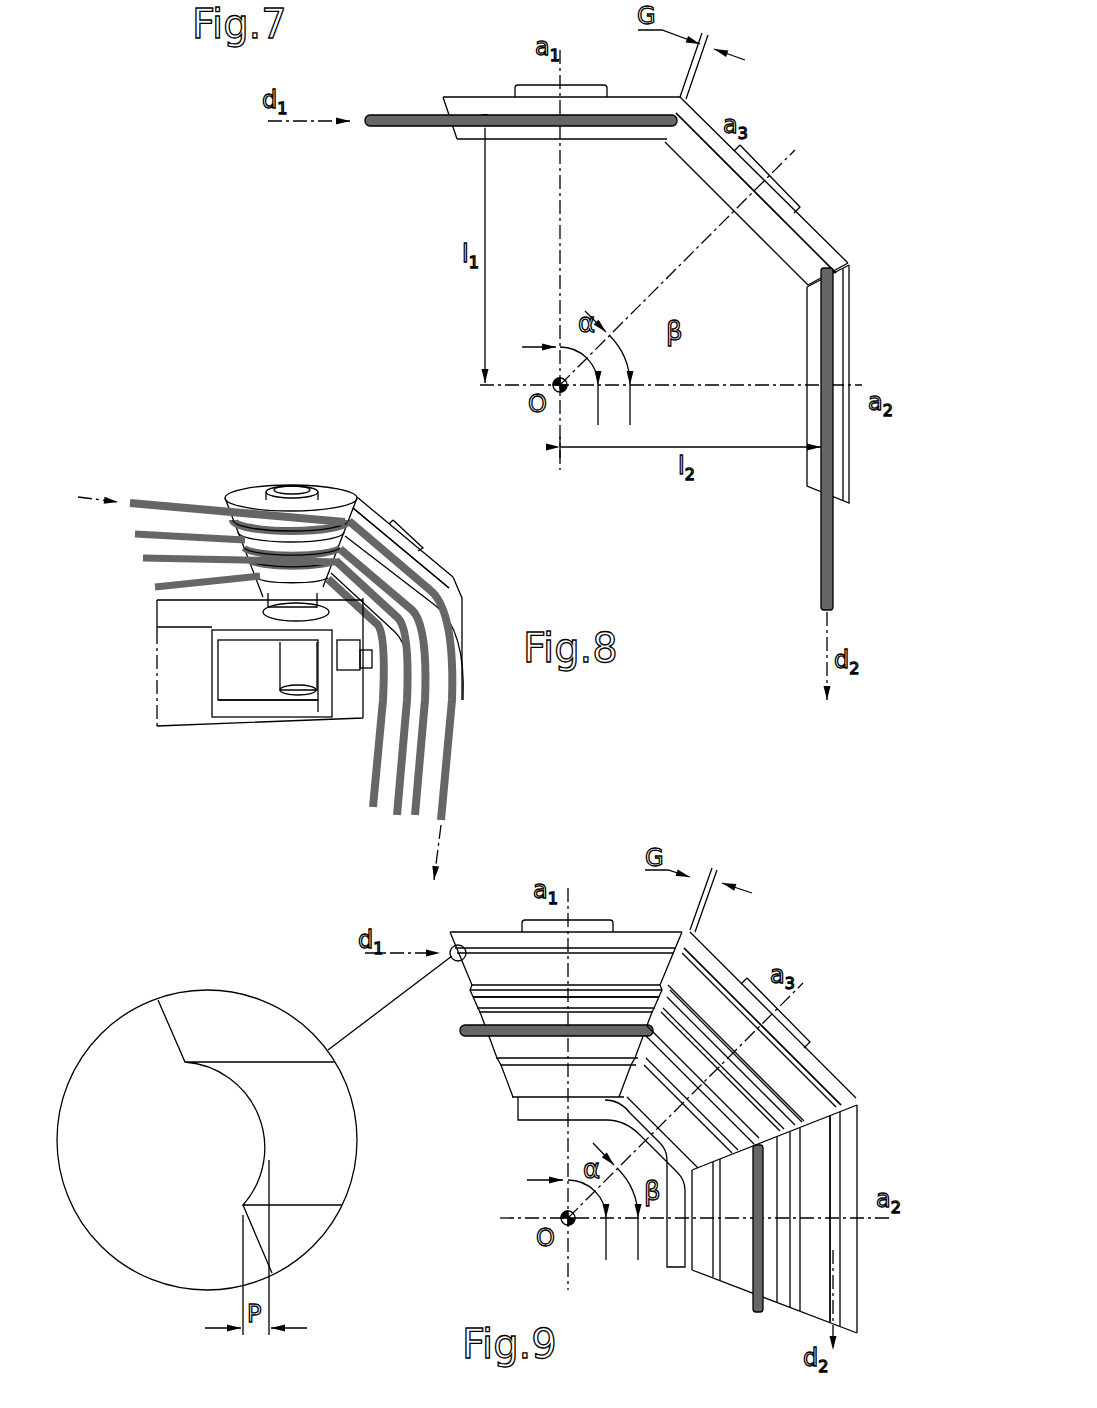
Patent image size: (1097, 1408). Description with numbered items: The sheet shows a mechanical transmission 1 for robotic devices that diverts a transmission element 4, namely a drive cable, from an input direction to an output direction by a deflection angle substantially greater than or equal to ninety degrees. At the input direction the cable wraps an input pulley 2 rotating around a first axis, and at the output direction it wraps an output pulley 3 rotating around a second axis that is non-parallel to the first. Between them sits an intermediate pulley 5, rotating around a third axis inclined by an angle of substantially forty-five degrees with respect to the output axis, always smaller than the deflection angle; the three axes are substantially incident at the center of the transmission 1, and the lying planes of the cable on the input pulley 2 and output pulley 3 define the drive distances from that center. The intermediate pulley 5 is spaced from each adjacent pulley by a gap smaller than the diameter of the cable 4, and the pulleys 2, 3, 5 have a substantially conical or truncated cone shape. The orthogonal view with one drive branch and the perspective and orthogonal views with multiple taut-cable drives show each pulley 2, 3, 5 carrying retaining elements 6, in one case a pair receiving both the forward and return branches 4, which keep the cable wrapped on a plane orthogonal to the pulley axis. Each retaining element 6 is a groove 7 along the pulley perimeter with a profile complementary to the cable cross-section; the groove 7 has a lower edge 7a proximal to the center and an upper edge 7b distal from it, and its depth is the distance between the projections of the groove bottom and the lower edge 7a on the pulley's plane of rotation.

In FIG. 7, the mechanical transmission 1 is at (863, 46).
In FIG. 8, the mechanical transmission 1 is at (198, 420).
In FIG. 9, the mechanical transmission 1 is at (878, 848).
In FIG. 7, the input pulley 2 is at (440, 95).
In FIG. 8, the input pulley 2 is at (291, 485).
In FIG. 9, the input pulley 2 is at (497, 1058).
In FIG. 7, the output pulley 3 is at (790, 497).
In FIG. 8, the output pulley 3 is at (366, 700).
In FIG. 9, the output pulley 3 is at (713, 1292).
In FIG. 8, the transmission element 4 is at (165, 505).
In FIG. 9, the transmission element 4 is at (552, 1036).
In FIG. 7, the intermediate pulley 5 is at (812, 187).
In FIG. 8, the intermediate pulley 5 is at (396, 508).
In FIG. 9, the intermediate pulley 5 is at (856, 1006).
In FIG. 7, the retaining element 6 is at (817, 246).
In FIG. 8, the retaining element 6 is at (238, 597).
In FIG. 9, the retaining element 6 is at (846, 1066).
In FIG. 8, the groove 7 is at (432, 688).
In FIG. 9, the groove 7 is at (494, 993).
In FIG. 9, the lower edge 7a is at (830, 1326).
In FIG. 9, the upper edge 7b is at (857, 1333).